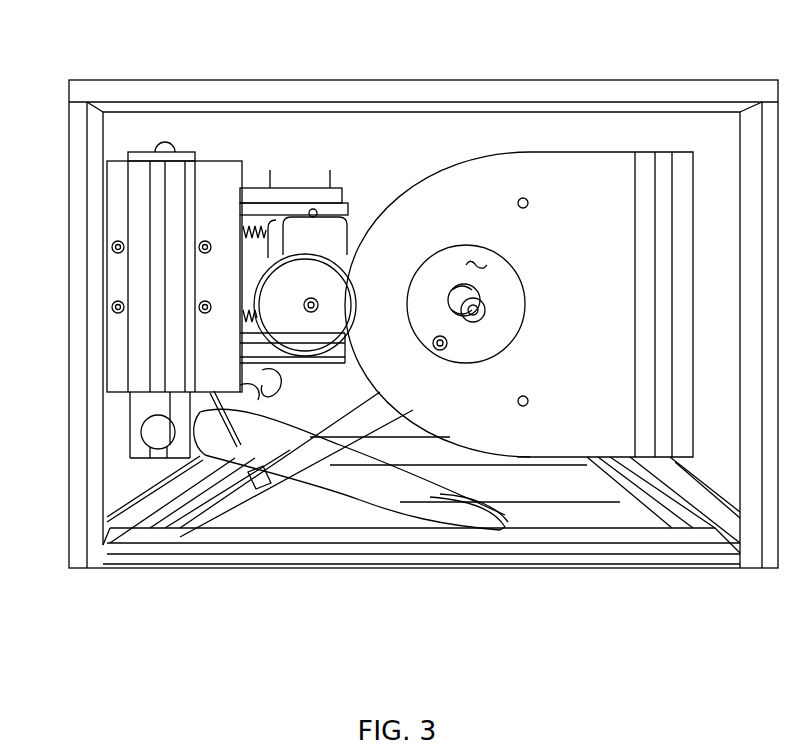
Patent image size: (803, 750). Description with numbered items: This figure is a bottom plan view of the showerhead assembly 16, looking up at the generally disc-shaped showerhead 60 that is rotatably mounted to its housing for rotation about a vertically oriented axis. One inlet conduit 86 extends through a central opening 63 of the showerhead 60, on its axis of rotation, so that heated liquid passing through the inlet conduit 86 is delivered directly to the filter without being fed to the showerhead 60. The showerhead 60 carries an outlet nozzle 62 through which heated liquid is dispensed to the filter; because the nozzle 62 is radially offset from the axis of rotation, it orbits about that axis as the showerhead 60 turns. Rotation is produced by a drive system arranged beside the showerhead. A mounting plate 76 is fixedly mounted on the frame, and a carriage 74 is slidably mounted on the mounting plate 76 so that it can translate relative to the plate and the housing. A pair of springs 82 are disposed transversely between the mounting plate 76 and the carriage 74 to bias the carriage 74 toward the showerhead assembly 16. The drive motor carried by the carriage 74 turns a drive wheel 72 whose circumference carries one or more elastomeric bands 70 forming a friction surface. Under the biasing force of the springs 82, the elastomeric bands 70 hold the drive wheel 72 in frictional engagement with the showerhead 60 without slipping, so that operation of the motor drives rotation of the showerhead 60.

The showerhead assembly 16 is at (614, 136).
The showerhead 60 is at (478, 262).
The outlet nozzle 62 is at (440, 350).
The central opening 63 is at (448, 294).
The elastomeric bands 70 is at (313, 352).
The drive wheel 72 is at (315, 265).
The carriage 74 is at (255, 258).
The mounting plate 76 is at (278, 188).
The springs 82 is at (243, 228).
The inlet conduit 86 is at (477, 320).